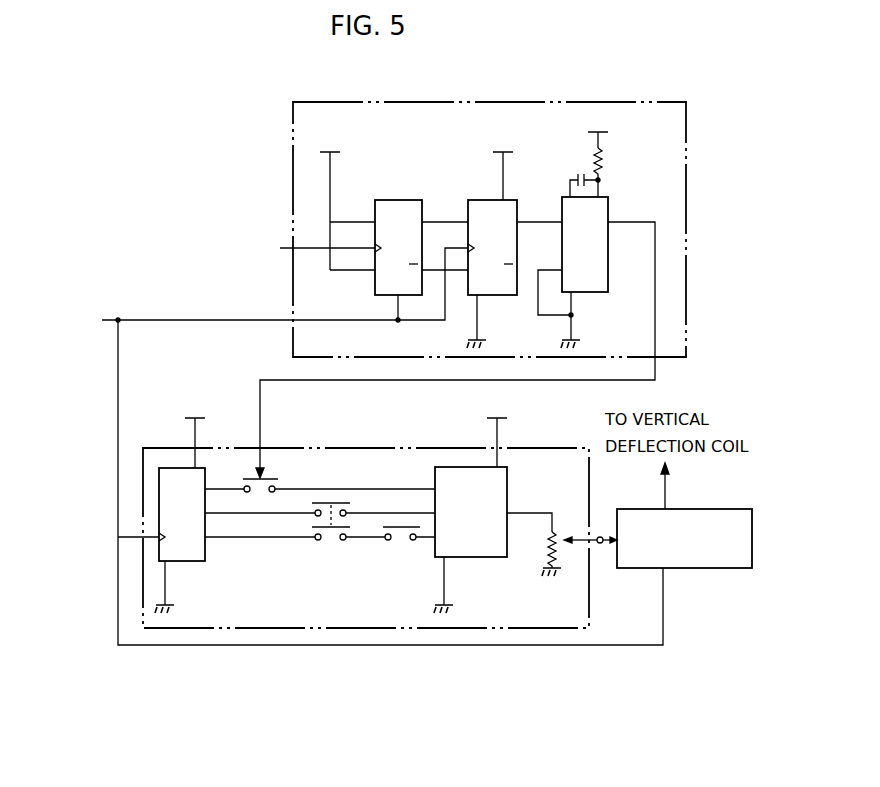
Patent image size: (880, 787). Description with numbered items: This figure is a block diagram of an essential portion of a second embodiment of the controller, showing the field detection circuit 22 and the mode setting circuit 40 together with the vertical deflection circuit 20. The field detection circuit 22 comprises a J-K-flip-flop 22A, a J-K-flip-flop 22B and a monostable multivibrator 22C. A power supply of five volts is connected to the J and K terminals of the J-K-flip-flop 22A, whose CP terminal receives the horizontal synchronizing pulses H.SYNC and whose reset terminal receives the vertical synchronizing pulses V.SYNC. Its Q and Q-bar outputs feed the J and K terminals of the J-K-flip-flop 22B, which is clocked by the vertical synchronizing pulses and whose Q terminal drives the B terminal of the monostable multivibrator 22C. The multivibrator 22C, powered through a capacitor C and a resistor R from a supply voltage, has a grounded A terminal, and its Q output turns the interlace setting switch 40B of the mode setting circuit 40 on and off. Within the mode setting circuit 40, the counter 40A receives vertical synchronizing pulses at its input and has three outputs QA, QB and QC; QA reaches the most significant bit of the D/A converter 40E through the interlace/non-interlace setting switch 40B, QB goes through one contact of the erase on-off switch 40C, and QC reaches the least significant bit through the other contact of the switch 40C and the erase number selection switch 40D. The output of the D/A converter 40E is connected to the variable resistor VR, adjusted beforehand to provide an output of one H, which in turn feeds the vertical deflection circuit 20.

The field detection circuit 22 is at (618, 102).
The J-K-flip-flop 22A is at (398, 197).
The J-K-flip-flop 22B is at (492, 197).
The monostable multivibrator 22C is at (608, 197).
The mode setting circuit 40 is at (380, 628).
The counter 40A is at (197, 561).
The interlace/non-interlace setting switch 40B is at (279, 482).
The erase on-off switch 40C is at (322, 542).
The erase number selection switch 40D is at (398, 542).
The digital-to-analog (D/A) converter 40E is at (478, 558).
The vertical deflection circuit 20 is at (705, 568).